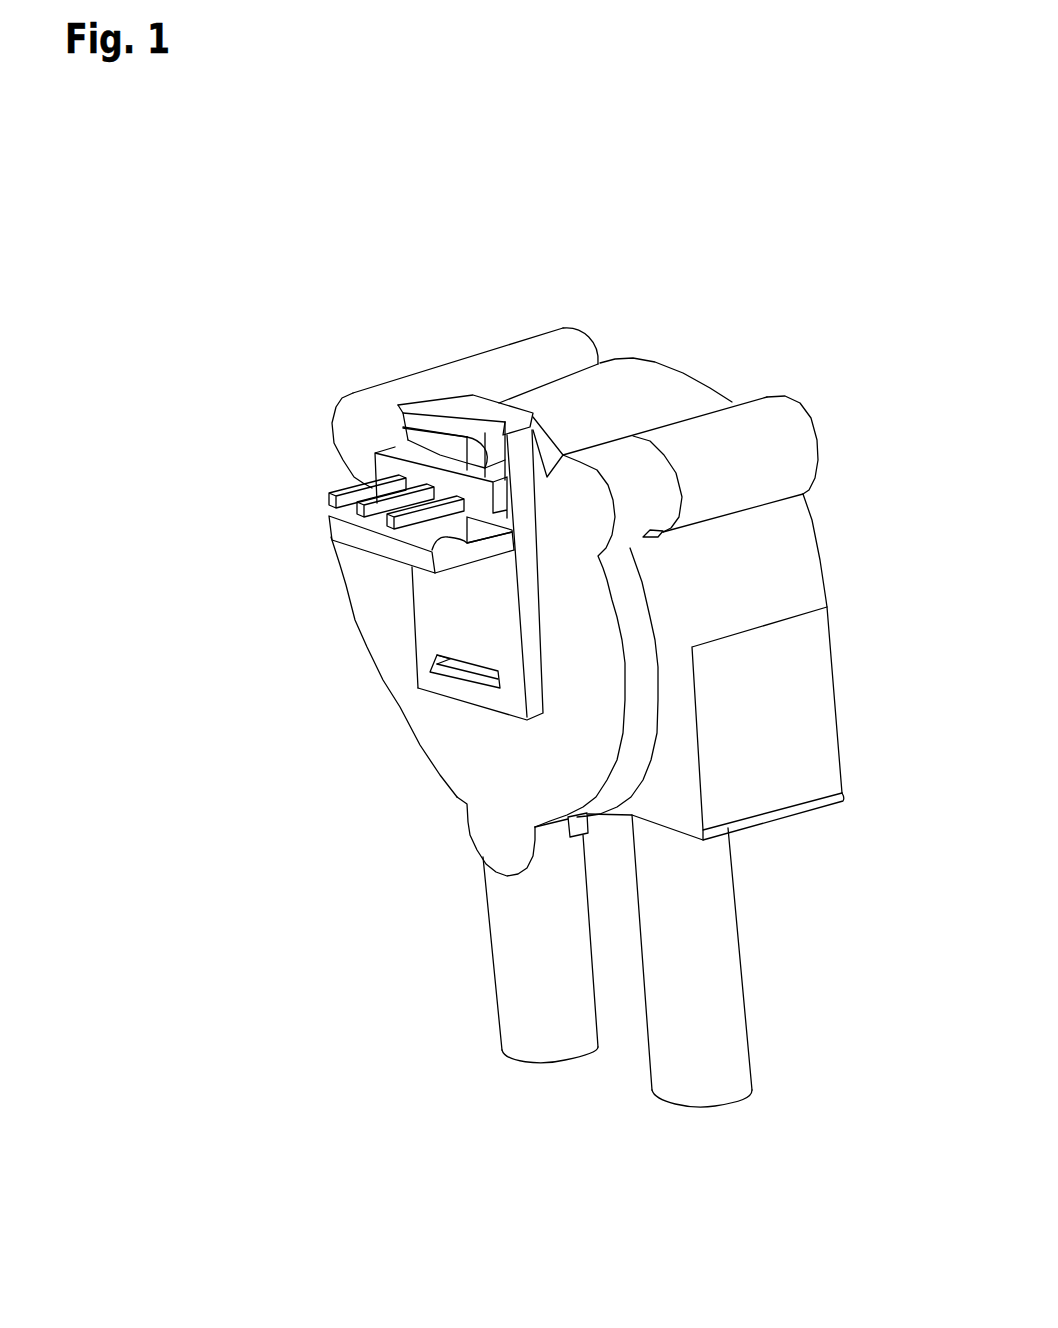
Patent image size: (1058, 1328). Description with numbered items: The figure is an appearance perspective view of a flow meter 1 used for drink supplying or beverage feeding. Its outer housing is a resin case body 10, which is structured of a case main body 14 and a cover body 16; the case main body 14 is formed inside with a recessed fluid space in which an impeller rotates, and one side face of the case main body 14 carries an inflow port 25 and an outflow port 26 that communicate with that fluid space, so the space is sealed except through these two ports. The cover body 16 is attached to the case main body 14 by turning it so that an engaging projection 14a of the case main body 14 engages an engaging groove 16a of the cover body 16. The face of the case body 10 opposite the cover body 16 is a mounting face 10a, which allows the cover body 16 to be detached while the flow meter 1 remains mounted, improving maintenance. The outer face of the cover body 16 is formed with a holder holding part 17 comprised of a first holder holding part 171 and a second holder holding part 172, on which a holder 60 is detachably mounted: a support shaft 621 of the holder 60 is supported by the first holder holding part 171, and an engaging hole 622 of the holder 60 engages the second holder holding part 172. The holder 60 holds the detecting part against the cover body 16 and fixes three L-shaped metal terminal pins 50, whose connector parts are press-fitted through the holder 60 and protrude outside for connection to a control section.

The flow meter 1 is at (268, 203).
The case body 10 is at (463, 207).
The mounting face 10a is at (813, 529).
The case main body 14 is at (507, 338).
The engaging projection 14a is at (478, 843).
The cover body 16 is at (377, 378).
The engaging groove 16a is at (598, 840).
The holder holding part 17 is at (110, 483).
The first holder holding part 171 is at (403, 428).
The second holder holding part 172 is at (440, 668).
The terminal pin 50 is at (329, 516).
The holder 60 is at (415, 690).
The support shaft 621 is at (353, 393).
The engaging hole 622 is at (440, 658).
The inflow port 25 is at (550, 1078).
The outflow port 26 is at (707, 1120).